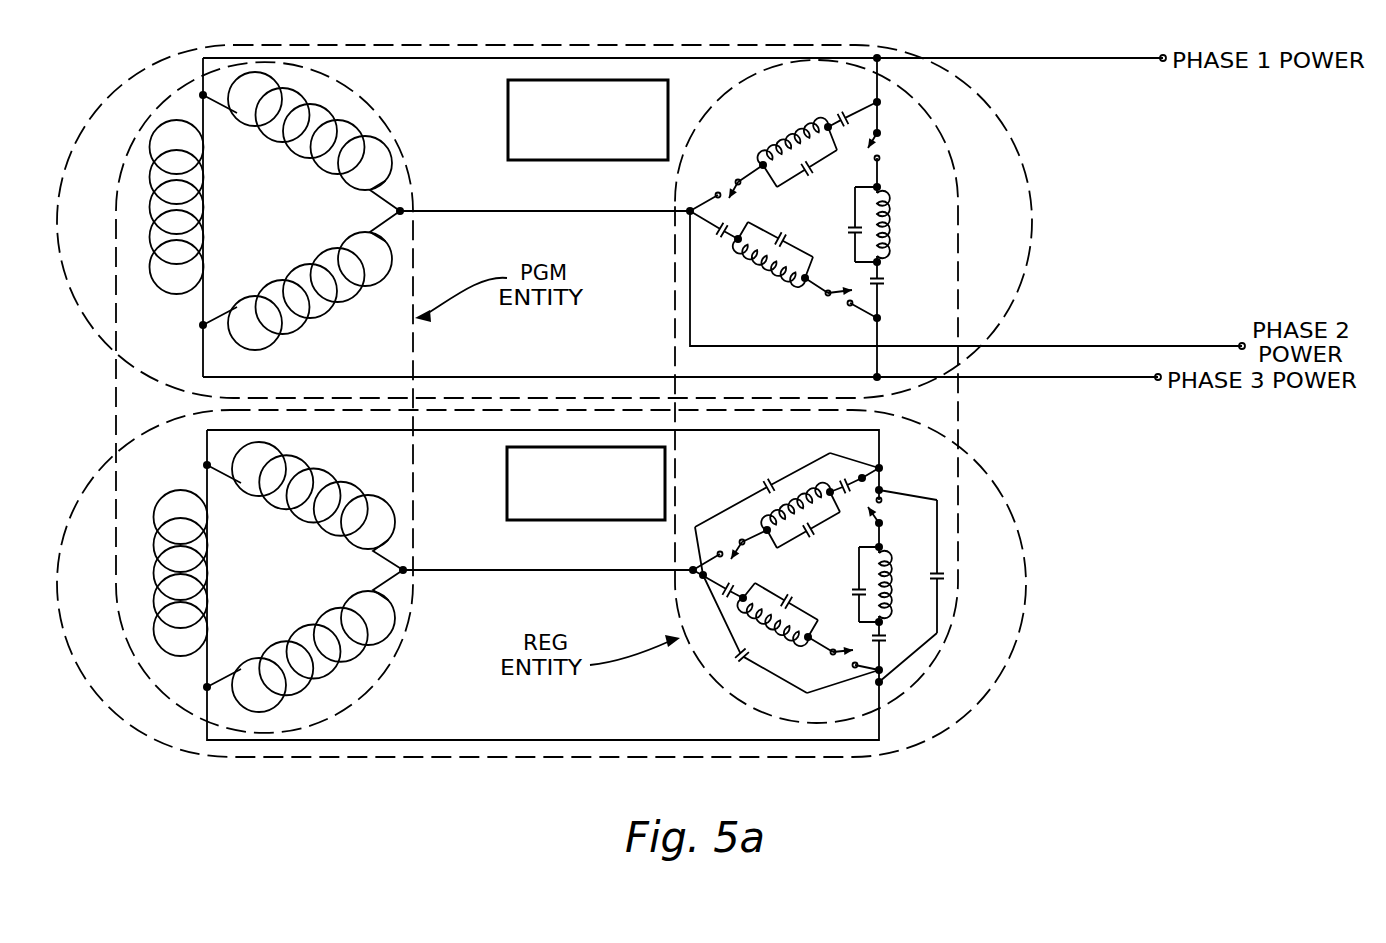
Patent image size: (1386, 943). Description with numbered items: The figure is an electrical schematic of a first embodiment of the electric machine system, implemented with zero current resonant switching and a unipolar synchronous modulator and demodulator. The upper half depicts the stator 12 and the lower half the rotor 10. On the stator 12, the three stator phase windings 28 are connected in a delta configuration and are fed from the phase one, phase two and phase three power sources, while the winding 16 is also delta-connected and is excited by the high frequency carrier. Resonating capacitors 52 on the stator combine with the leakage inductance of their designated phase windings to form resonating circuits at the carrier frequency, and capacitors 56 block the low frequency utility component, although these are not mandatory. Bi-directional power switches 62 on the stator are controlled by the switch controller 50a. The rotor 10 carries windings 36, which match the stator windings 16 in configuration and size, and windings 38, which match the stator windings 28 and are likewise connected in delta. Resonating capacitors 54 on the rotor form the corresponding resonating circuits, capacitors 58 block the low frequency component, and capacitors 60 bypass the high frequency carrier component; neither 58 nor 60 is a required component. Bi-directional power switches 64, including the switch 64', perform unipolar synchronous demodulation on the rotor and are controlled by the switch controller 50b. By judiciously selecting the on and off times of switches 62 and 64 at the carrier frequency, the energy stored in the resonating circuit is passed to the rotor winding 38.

The rotor 10 is at (1030, 520).
The stator 12 is at (1045, 232).
The stator phase windings 16 is at (812, 282).
The stator phase windings 28 is at (397, 150).
The rotor windings 36 is at (800, 640).
The rotor windings 38 is at (397, 518).
The switch controller 50a is at (593, 163).
The switch controller 50b is at (600, 522).
The resonating capacitors 52 is at (809, 175).
The resonating capacitors 54 is at (817, 532).
The capacitors 56 is at (847, 106).
The capacitors 58 is at (850, 468).
The capacitors 60 is at (775, 463).
The switches 62 is at (729, 188).
The switches 64 is at (811, 534).
The switch 64' is at (843, 660).